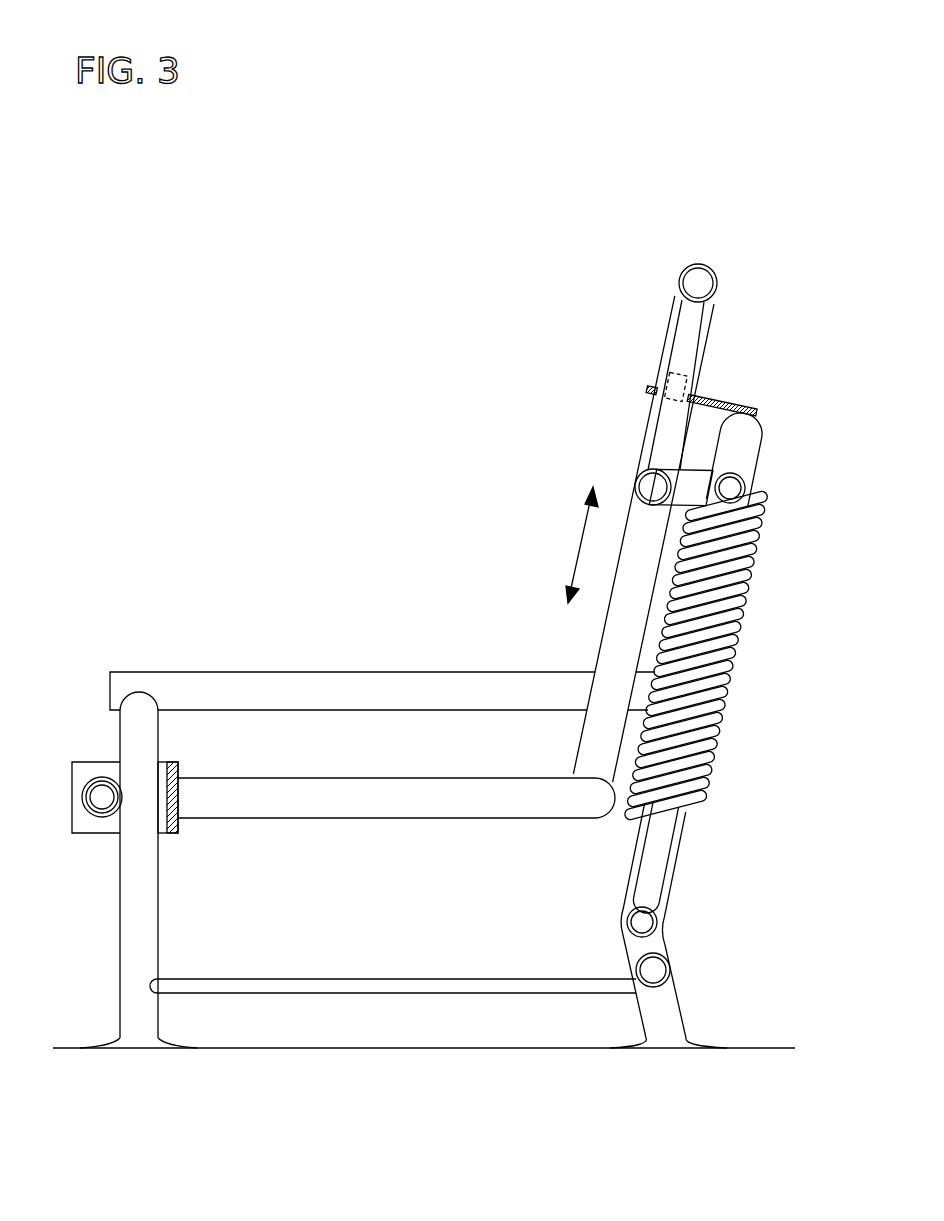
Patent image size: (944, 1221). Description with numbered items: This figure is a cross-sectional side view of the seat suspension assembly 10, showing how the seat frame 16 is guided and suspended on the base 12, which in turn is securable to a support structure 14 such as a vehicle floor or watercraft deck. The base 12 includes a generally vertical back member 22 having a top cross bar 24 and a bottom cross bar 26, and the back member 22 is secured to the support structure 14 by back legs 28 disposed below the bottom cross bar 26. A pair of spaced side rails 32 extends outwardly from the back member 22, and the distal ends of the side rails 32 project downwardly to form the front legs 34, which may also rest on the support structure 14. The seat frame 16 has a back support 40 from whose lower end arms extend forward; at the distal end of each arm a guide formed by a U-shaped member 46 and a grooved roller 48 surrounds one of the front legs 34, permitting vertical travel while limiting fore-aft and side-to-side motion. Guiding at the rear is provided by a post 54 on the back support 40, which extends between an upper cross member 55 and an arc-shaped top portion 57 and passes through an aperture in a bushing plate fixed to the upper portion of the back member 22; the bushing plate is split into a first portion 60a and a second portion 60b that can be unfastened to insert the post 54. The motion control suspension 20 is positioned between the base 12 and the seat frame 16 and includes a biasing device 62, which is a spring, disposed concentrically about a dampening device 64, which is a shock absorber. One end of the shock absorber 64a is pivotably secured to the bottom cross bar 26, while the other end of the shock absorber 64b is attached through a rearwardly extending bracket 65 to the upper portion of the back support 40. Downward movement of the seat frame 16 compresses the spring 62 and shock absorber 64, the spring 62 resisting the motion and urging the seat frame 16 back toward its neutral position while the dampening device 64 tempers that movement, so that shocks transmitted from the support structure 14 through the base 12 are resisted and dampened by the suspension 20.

The seat suspension assembly 10 is at (264, 294).
The base 12 is at (133, 942).
The support structure 14 is at (760, 1047).
The seat frame 16 is at (340, 803).
The motion control suspension 20 is at (718, 713).
The back member 22 is at (632, 868).
The top cross bar 24 is at (745, 437).
The bottom cross bar 26 is at (633, 958).
The back legs 28 is at (670, 1015).
The side rails 32 is at (237, 681).
The front legs 34 is at (133, 1021).
The back support 40 is at (622, 607).
The U-shaped member 46 is at (97, 831).
The grooved roller 48 is at (100, 783).
The post 54 is at (687, 330).
The upper cross member 55 is at (638, 482).
The arc-shaped top portion 57 is at (700, 263).
The first portion of bushing plate 60a is at (657, 387).
The second portion of bushing plate 60b is at (730, 400).
The biasing device 62 is at (743, 563).
The dampening device 64 is at (660, 845).
The one end of shock absorber 64a is at (627, 908).
The other end of shock absorber 64b is at (750, 492).
The bracket 65 is at (692, 480).